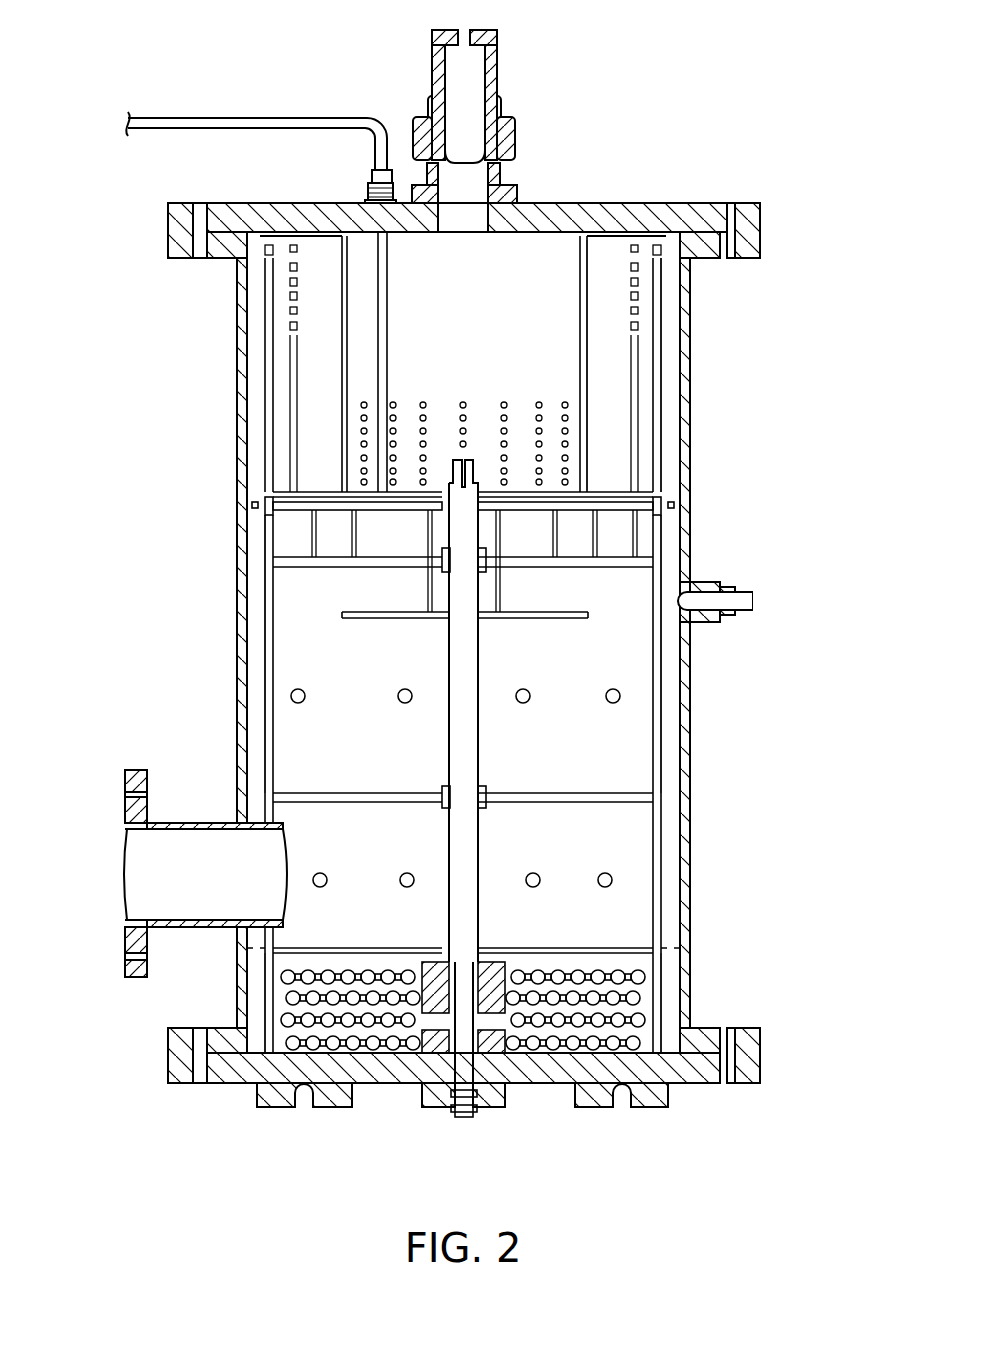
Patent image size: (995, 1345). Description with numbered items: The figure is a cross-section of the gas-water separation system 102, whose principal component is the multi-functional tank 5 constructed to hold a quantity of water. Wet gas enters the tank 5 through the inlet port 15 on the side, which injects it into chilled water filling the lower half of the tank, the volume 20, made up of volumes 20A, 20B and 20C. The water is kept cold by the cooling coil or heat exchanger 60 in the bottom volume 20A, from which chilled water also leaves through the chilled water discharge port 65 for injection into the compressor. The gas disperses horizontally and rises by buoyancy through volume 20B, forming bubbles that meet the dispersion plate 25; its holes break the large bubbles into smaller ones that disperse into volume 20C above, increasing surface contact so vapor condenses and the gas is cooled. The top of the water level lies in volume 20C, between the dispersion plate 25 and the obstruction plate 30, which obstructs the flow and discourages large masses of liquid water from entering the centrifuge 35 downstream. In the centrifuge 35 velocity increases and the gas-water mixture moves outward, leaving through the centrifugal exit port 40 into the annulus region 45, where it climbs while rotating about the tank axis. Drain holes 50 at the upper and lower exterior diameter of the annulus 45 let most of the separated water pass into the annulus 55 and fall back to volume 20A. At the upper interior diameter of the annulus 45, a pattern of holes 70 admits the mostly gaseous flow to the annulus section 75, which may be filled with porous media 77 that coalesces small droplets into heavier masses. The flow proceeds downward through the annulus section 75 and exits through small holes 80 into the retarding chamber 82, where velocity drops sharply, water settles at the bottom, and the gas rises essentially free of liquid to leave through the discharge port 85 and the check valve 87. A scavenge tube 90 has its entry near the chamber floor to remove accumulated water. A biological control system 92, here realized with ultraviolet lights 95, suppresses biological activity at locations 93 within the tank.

The multi-functional tank 5 is at (72, 1067).
The inlet port 15 is at (145, 880).
The volume 20 is at (738, 783).
The volume 20A is at (645, 997).
The volume 20B is at (615, 860).
The volume 20C is at (288, 647).
The dispersion plate 25 is at (357, 792).
The obstruction plate 30 is at (540, 614).
The centrifuge 35 is at (405, 538).
The centrifugal exit port 40 is at (277, 516).
The annulus region 45 is at (278, 435).
The drain holes 50 is at (660, 253).
The annulus 55 is at (258, 395).
The heat exchanger 60 is at (317, 1023).
The chilled water discharge port 65 is at (450, 1120).
The holes 70 is at (288, 272).
The annulus section 75 is at (613, 252).
The porous media 77 is at (331, 388).
The small holes 80 is at (502, 400).
The retarding chamber 82 is at (530, 252).
The discharge port 85 is at (468, 228).
The check valve 87 is at (430, 76).
The scavenge tube 90 is at (146, 118).
The biological control system 92 is at (778, 732).
The locations 93 is at (562, 898).
The ultraviolet lights 95 is at (625, 690).
The gas-water separation system 102 is at (822, 129).